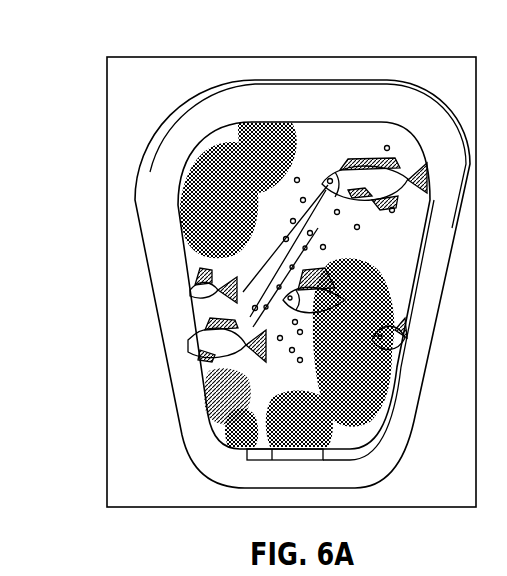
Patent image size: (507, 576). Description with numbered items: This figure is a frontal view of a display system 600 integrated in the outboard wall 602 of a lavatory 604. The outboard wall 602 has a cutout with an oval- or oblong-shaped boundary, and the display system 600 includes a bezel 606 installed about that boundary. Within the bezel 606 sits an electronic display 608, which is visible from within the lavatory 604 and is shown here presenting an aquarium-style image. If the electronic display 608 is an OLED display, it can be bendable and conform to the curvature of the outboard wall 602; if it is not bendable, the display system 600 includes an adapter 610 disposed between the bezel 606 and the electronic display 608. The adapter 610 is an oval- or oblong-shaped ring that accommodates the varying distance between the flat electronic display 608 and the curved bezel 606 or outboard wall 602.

The display system 600 is at (199, 95).
The outboard wall 602 is at (122, 423).
The lavatory 604 is at (80, 110).
The bezel 606 is at (148, 218).
The electronic display 608 is at (222, 317).
The adapter 610 is at (238, 453).